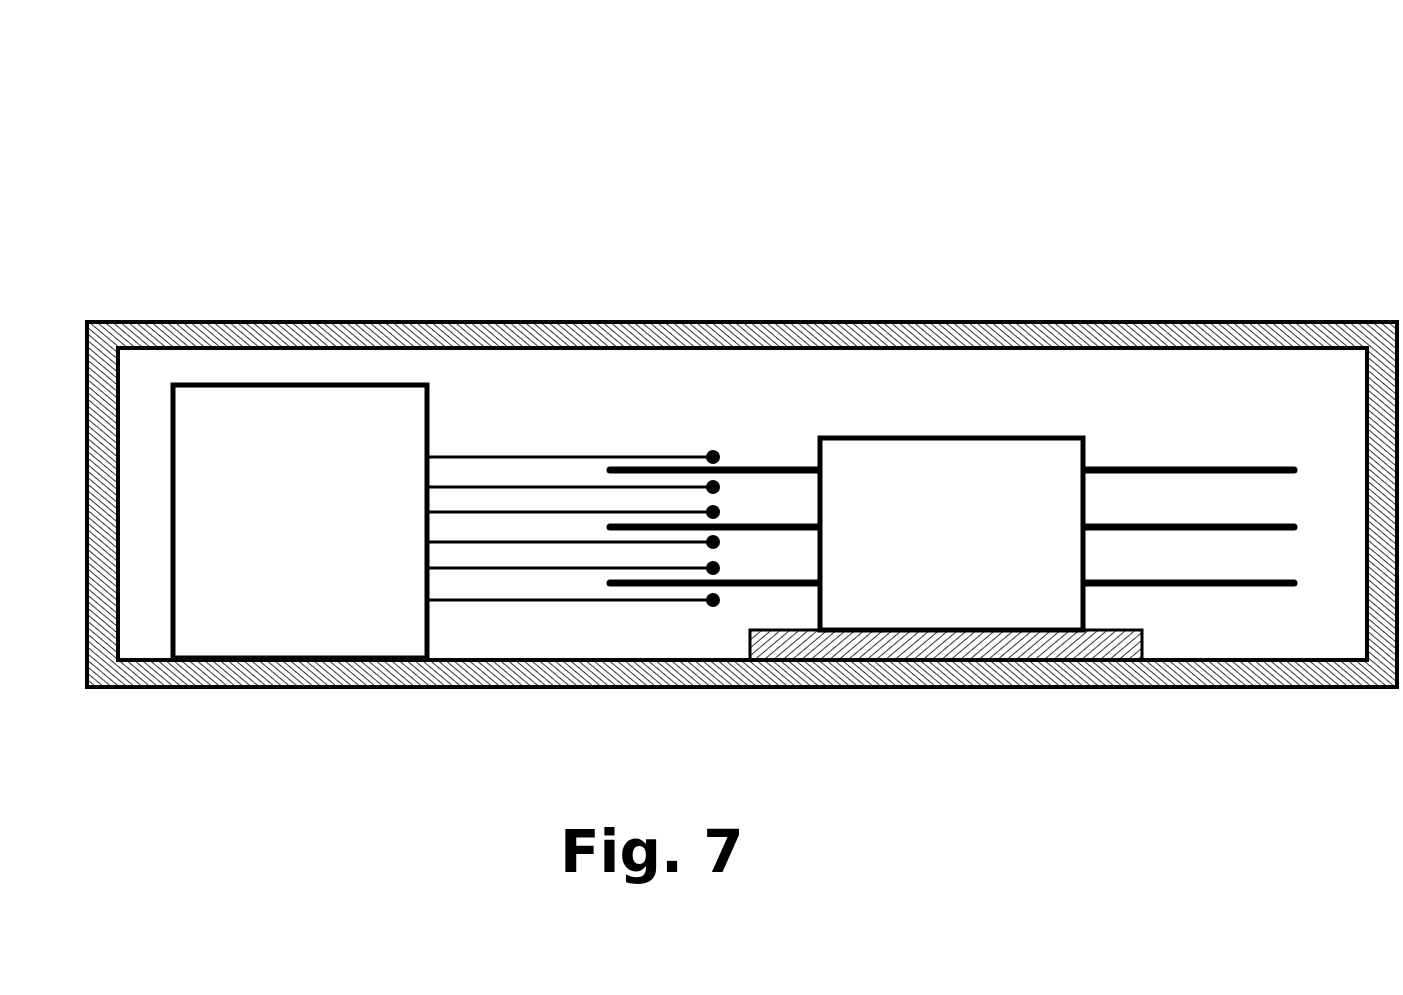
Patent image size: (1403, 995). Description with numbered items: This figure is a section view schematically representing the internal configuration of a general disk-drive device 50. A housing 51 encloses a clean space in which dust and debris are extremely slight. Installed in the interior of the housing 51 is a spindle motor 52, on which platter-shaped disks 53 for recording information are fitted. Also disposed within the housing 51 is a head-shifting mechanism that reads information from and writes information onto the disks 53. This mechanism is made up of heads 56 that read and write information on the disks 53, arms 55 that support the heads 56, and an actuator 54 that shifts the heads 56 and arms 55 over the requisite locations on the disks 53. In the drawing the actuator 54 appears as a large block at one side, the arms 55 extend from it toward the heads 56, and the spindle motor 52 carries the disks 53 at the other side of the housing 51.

The disk-drive device 50 is at (712, 72).
The housing 51 is at (1100, 327).
The spindle motor 52 is at (917, 467).
The disks 53 is at (1195, 527).
The actuator 54 is at (245, 422).
The arms 55 is at (508, 487).
The heads 56 is at (720, 490).